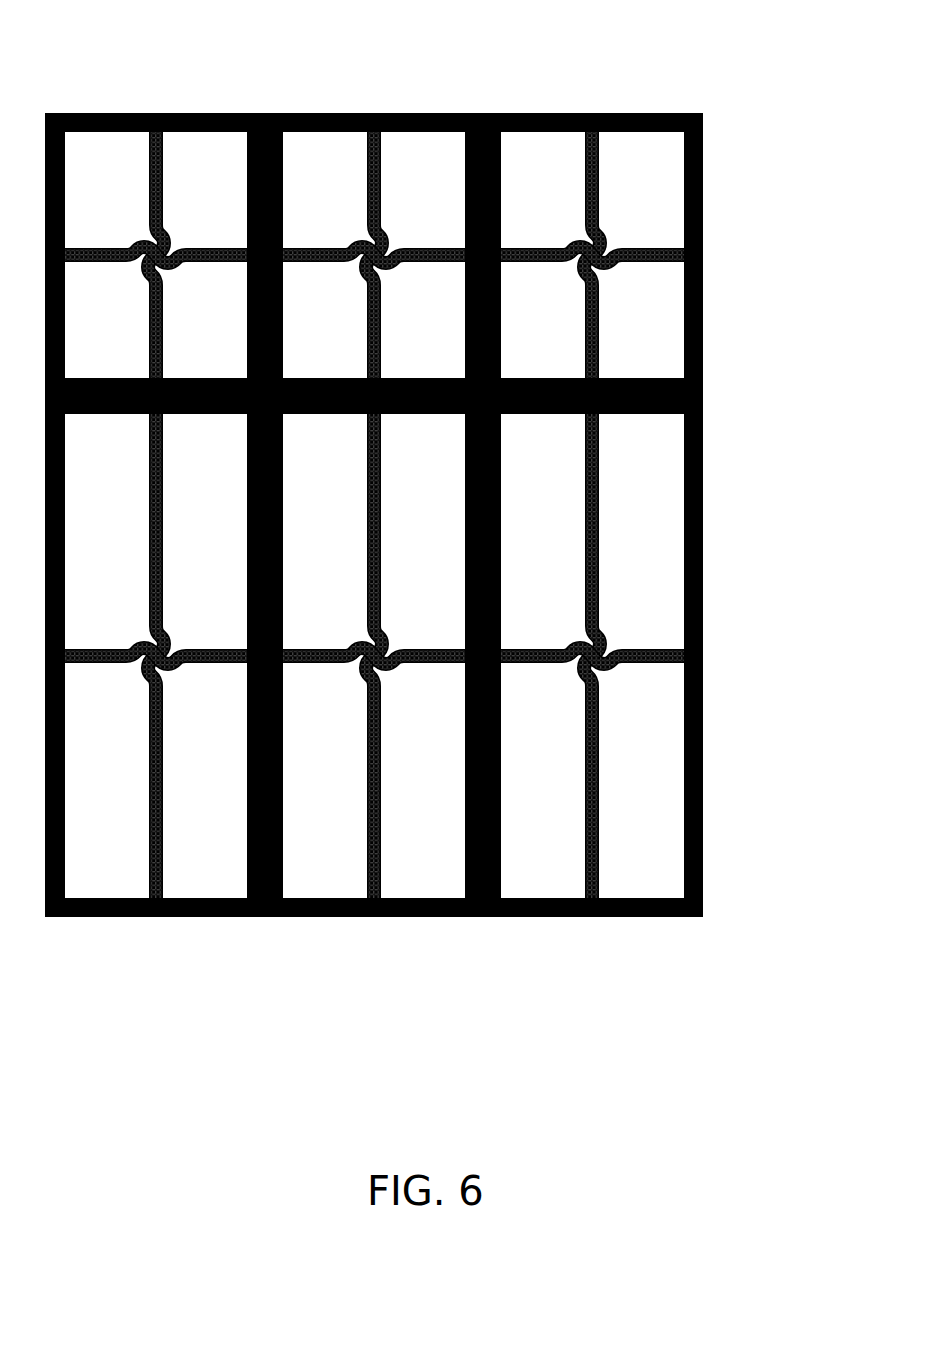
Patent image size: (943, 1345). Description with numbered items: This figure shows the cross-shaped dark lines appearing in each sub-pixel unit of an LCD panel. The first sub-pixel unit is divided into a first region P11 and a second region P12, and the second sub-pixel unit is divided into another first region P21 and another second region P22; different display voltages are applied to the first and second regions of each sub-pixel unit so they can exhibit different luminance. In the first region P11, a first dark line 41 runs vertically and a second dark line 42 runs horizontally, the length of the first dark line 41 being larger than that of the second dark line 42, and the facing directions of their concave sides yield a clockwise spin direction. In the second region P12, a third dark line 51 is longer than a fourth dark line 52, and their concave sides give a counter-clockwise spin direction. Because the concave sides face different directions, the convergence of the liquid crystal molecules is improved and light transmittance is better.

The first dark line 41 is at (588, 168).
The second dark line 42 is at (645, 258).
The third dark line 51 is at (588, 566).
The fourth dark line 52 is at (645, 658).
The first region P11 is at (575, 113).
The first region P21 is at (403, 113).
The second region P12 is at (581, 918).
The second region P22 is at (408, 918).